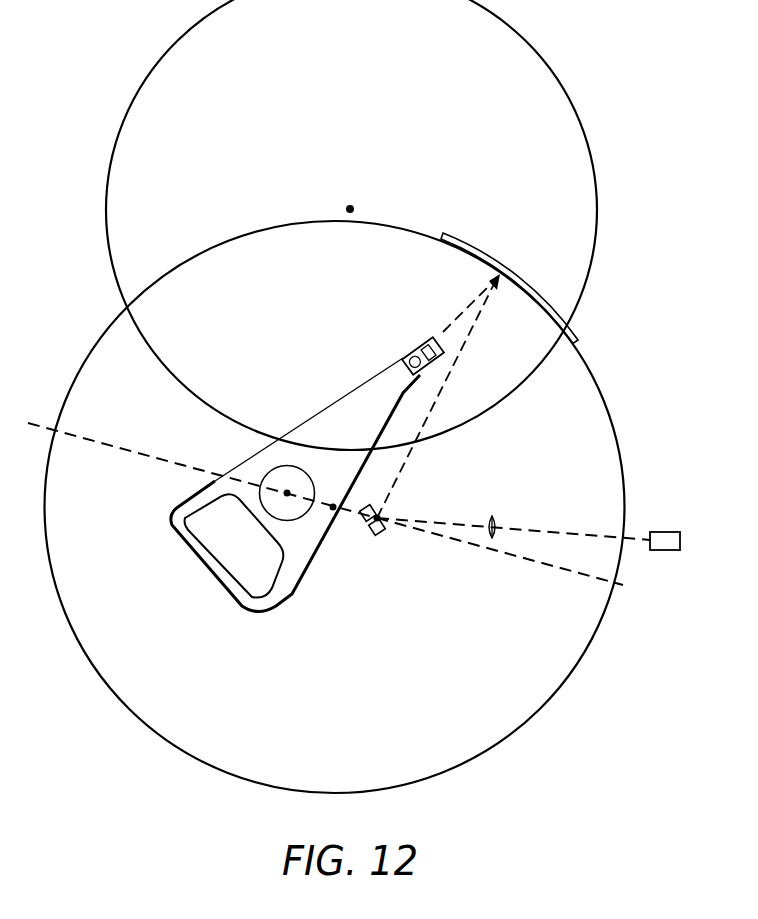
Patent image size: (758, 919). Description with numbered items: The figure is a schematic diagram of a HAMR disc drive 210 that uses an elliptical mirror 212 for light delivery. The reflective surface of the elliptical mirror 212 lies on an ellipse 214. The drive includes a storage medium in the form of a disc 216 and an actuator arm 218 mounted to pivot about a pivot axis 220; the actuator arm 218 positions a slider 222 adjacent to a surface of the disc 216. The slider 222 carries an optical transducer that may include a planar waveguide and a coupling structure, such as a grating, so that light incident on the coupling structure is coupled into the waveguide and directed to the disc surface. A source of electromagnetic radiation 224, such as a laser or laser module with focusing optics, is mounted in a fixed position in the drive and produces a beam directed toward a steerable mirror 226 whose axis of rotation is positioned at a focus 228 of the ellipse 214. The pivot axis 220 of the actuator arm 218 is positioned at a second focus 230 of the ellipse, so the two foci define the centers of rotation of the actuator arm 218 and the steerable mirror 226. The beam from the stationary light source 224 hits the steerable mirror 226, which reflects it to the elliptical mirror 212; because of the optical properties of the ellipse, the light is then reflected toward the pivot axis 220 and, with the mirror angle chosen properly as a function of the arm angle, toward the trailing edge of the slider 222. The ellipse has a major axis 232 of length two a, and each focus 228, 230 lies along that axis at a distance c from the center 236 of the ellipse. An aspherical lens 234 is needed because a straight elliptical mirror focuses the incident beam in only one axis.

The HAMR disc drive 210 is at (623, 94).
The elliptical mirror 212 is at (533, 289).
The ellipse 214 is at (578, 662).
The disc 216 is at (134, 128).
The actuator arm 218 is at (220, 598).
The pivot axis 220 is at (286, 491).
The slider 222 is at (433, 338).
The source of electromagnetic radiation 224 is at (660, 551).
The steerable mirror 226 is at (385, 532).
The focus 228 is at (366, 523).
The second focus 230 is at (266, 511).
The major axis 232 is at (530, 560).
The aspherical lens 234 is at (496, 517).
The center 236 is at (333, 505).